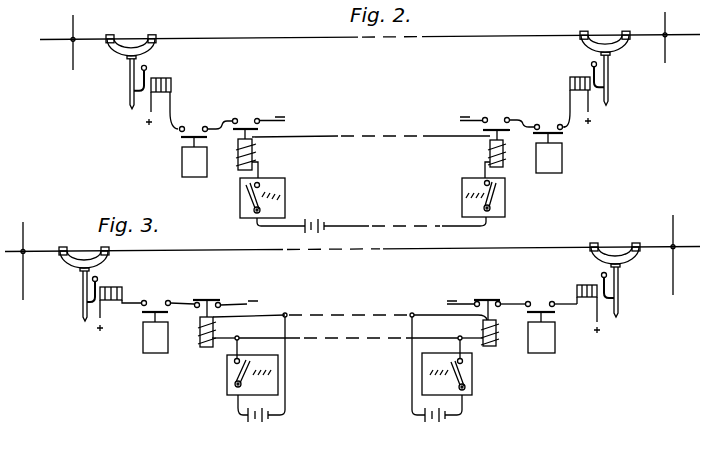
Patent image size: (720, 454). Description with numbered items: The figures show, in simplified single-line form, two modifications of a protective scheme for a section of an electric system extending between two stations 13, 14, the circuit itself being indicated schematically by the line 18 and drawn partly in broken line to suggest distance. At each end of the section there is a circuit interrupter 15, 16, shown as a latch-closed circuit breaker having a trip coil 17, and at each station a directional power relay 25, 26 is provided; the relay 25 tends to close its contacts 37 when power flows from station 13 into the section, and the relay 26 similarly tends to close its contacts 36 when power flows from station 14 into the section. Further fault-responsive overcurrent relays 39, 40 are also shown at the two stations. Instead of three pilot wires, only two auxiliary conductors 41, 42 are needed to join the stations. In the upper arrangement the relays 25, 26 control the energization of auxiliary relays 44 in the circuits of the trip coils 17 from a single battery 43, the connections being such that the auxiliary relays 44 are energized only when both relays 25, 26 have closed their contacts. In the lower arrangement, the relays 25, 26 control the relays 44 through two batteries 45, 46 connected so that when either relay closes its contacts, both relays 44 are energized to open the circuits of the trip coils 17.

In FIG. 2, the station 13 is at (80, 94).
In FIG. 3, the station 13 is at (32, 322).
In FIG. 2, the station 14 is at (673, 92).
In FIG. 3, the station 14 is at (681, 320).
In FIG. 2, the circuit interrupter 15 is at (151, 46).
In FIG. 3, the circuit interrupter 15 is at (103, 258).
In FIG. 2, the circuit interrupter 16 is at (586, 44).
In FIG. 3, the circuit interrupter 16 is at (597, 256).
In FIG. 2, the trip coil 17 is at (160, 77).
In FIG. 3, the trip coil 17 is at (121, 288).
In FIG. 2, the line 18 is at (303, 38).
In FIG. 3, the line 18 is at (283, 250).
In FIG. 2, the relay 25 is at (247, 199).
In FIG. 3, the relay 25 is at (238, 371).
In FIG. 2, the relay 26 is at (499, 198).
In FIG. 3, the relay 26 is at (463, 372).
In FIG. 2, the contacts 36 is at (484, 185).
In FIG. 3, the contacts 36 is at (467, 363).
In FIG. 2, the contacts 37 is at (260, 187).
In FIG. 3, the contacts 37 is at (234, 362).
In FIG. 2, the overcurrent relay 39 is at (194, 157).
In FIG. 3, the overcurrent relay 39 is at (155, 332).
In FIG. 2, the overcurrent relay 40 is at (548, 153).
In FIG. 3, the overcurrent relay 40 is at (541, 332).
In FIG. 2, the auxiliary conductor 41 is at (357, 224).
In FIG. 3, the auxiliary conductor 41 is at (312, 338).
In FIG. 2, the auxiliary conductor 42 is at (336, 137).
In FIG. 3, the auxiliary conductor 42 is at (317, 314).
In FIG. 2, the battery 43 is at (317, 218).
In FIG. 2, the auxiliary relay 44 is at (255, 149).
In FIG. 3, the auxiliary relay 44 is at (214, 329).
In FIG. 3, the battery 45 is at (259, 424).
In FIG. 3, the battery 46 is at (438, 424).